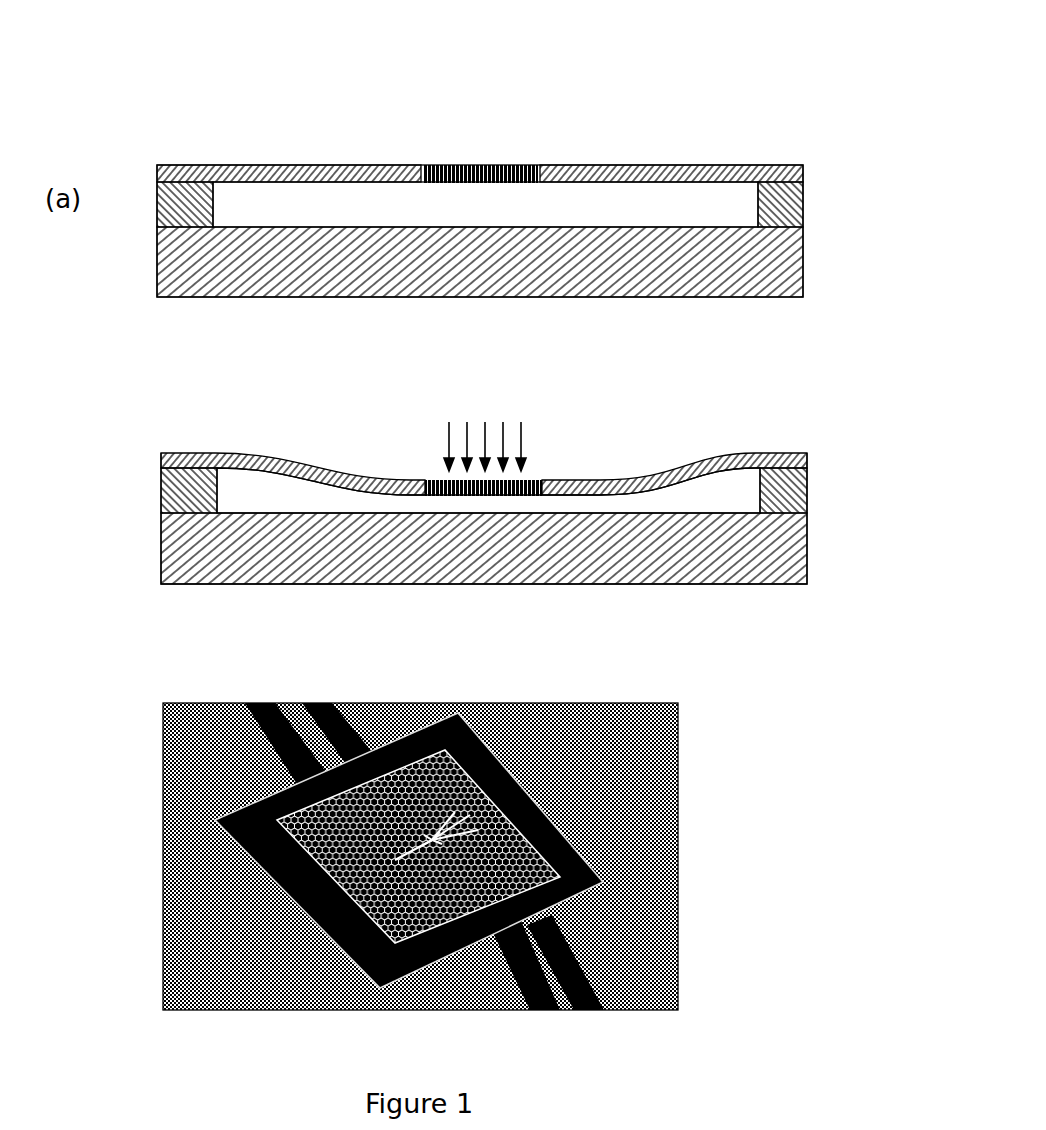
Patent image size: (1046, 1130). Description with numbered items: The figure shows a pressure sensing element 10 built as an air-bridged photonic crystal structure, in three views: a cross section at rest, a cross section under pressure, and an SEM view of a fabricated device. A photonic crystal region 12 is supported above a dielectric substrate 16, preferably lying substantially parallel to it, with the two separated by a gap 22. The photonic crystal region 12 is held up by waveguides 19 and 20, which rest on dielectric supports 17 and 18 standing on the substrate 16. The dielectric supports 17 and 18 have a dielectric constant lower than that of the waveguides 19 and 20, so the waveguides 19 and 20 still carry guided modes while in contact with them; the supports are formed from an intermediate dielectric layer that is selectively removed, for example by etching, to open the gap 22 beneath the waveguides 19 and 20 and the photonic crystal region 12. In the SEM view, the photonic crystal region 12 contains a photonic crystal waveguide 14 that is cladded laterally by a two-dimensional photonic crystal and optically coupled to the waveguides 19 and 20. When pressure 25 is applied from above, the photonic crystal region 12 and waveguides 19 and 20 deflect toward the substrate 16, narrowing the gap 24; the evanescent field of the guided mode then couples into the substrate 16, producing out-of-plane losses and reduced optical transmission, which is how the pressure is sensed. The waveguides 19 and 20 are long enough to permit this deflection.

The pressure sensing element 10 is at (669, 60).
The photonic crystal region 12 is at (480, 165).
The photonic crystal waveguide 14 is at (448, 875).
The dielectric substrate 16 is at (733, 263).
The dielectric support 17 is at (178, 202).
The dielectric support 18 is at (778, 192).
The waveguide 19 is at (331, 165).
The waveguide 20 is at (605, 165).
The gap 22 is at (724, 214).
The gap 24 is at (740, 504).
The applied pressure 25 is at (501, 414).